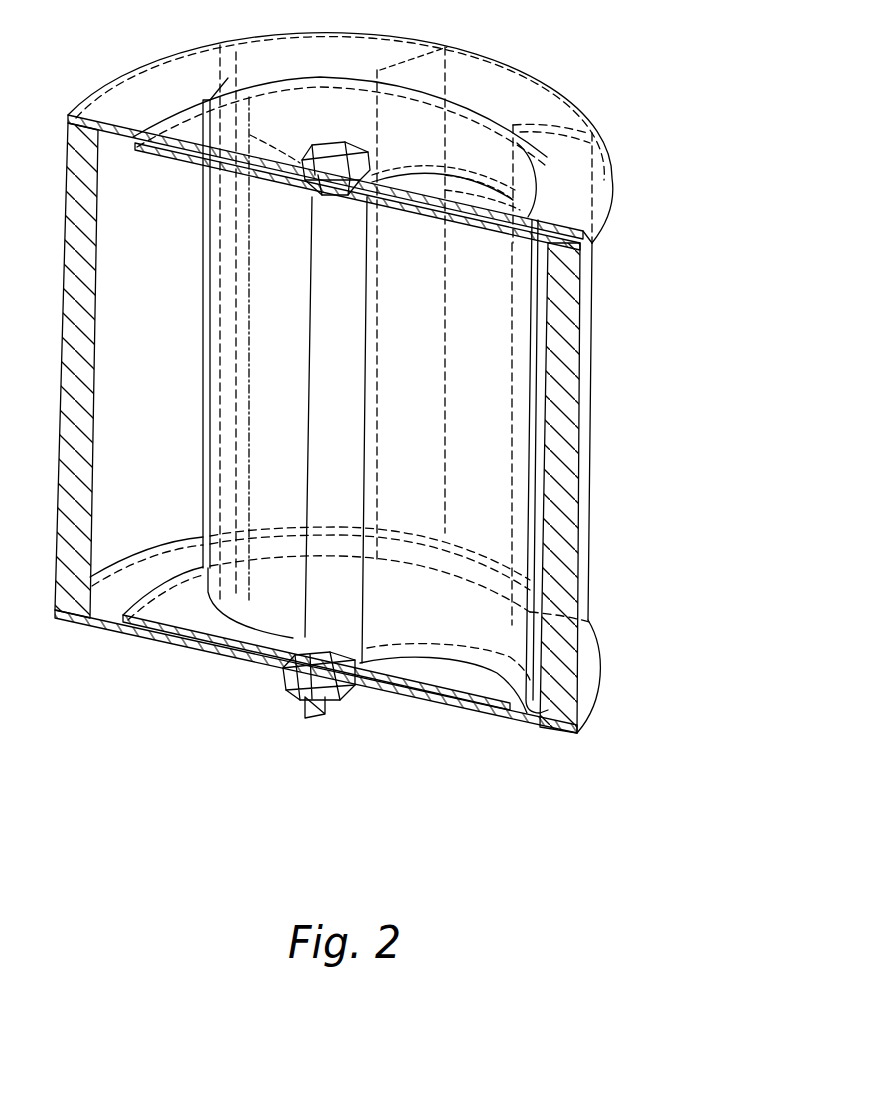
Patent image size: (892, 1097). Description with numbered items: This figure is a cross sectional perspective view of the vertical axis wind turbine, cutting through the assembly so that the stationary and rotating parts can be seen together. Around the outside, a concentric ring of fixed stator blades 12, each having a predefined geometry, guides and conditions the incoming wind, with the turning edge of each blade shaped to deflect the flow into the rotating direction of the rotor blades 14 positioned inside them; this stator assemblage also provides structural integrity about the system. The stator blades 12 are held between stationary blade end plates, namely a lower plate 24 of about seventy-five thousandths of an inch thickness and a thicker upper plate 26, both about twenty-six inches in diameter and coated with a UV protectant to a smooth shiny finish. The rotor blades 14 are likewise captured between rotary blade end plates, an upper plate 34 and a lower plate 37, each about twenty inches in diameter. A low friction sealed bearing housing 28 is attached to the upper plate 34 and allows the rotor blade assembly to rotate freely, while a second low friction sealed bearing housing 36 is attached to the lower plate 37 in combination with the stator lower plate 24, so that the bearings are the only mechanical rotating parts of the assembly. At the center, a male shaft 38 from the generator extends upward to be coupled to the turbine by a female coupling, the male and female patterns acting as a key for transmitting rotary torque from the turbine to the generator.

The stator blades 12 is at (435, 70).
The rotor blades 14 is at (468, 463).
The lower plate 24 is at (598, 687).
The upper plate 26 is at (497, 101).
The low friction sealed bearing housing 28 is at (343, 147).
The upper plate 34 is at (513, 243).
The low friction sealed bearing housing 36 is at (293, 685).
The lower plate 37 is at (490, 683).
The male shaft 38 is at (307, 713).